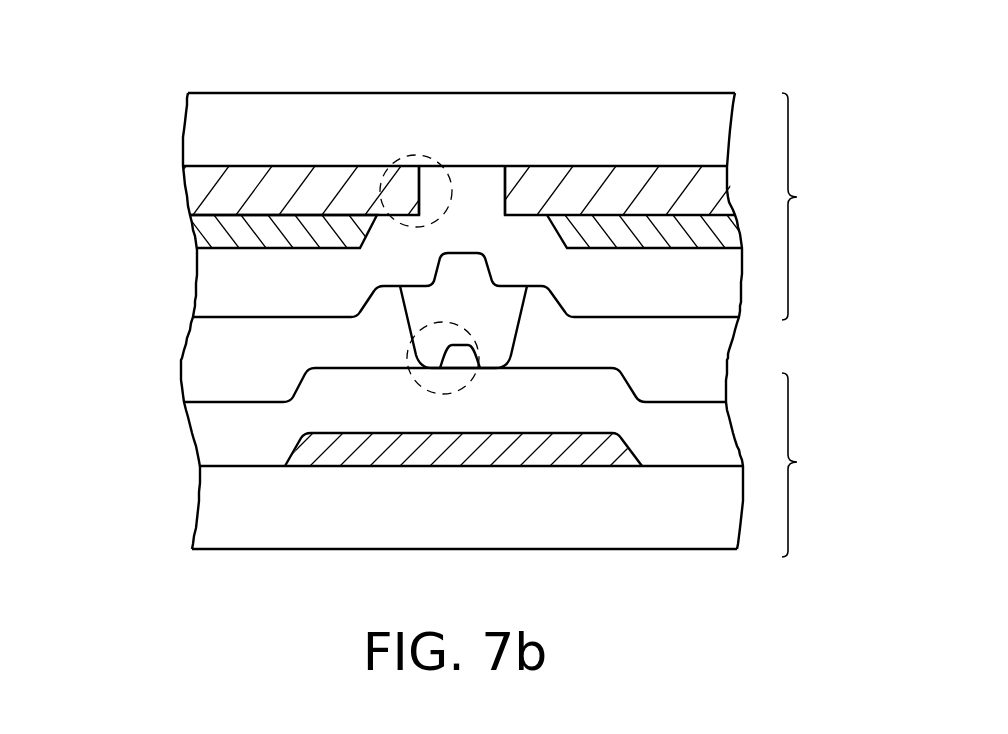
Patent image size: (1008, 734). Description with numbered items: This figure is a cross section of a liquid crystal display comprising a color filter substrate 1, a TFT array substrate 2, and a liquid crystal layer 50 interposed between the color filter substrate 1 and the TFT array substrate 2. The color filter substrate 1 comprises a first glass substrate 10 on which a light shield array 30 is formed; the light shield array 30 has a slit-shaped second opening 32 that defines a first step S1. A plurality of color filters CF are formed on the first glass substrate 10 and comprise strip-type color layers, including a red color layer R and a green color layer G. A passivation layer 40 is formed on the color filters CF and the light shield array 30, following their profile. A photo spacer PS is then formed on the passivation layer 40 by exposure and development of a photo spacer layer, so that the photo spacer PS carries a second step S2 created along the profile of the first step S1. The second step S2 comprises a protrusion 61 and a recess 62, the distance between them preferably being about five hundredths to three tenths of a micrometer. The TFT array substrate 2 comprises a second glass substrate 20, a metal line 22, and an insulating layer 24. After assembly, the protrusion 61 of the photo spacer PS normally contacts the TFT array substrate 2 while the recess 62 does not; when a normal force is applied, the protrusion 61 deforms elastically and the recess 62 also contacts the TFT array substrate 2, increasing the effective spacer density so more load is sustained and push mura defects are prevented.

The first glass substrate 10 is at (205, 123).
The light shield array 30 is at (205, 187).
The second opening 32 is at (485, 197).
The color filters CF is at (190, 230).
The red color layer R is at (287, 228).
The green color layer G is at (660, 242).
The first step S1 is at (418, 156).
The passivation layer 40 is at (220, 293).
The photo spacer PS is at (435, 303).
The liquid crystal layer 50 is at (203, 364).
The protrusion 61 is at (430, 368).
The recess 62 is at (467, 345).
The second step S2 is at (445, 392).
The insulating layer 24 is at (212, 420).
The metal line 22 is at (327, 455).
The second glass substrate 20 is at (212, 510).
The color filter substrate 1 is at (806, 206).
The TFT array substrate 2 is at (806, 465).